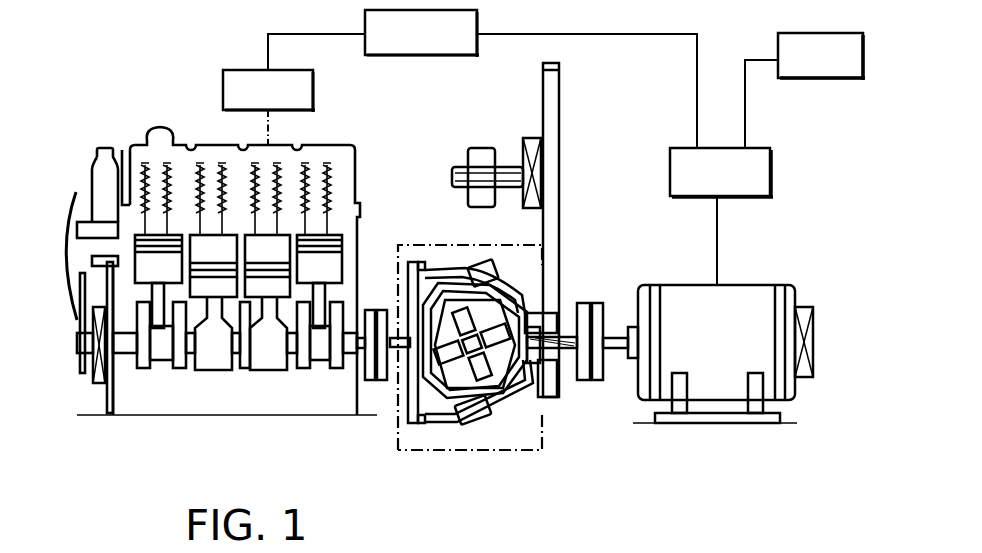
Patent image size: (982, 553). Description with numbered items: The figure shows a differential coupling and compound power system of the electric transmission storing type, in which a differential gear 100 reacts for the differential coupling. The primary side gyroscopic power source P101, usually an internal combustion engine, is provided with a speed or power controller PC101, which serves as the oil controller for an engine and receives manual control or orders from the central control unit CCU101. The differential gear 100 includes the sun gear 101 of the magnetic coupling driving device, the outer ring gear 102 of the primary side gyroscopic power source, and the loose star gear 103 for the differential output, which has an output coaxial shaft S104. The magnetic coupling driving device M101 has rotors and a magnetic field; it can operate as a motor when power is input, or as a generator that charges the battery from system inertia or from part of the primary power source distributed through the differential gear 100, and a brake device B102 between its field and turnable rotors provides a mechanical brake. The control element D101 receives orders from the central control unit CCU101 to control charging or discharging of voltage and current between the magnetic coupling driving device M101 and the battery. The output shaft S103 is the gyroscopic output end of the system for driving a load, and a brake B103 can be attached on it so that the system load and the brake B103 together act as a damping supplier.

The differential gear 100 is at (512, 452).
The sun gear 101 is at (528, 388).
The outer ring gear 102 is at (416, 302).
The loose star gear 103 is at (486, 300).
The primary side gyroscopic power source P101 is at (358, 190).
The magnetic coupling driving device M101 is at (748, 297).
The control element of magnetic coupling driving device D101 is at (721, 216).
The speed or power controller PC101 is at (269, 107).
The central control unit CCU101 is at (482, 79).
The brake device B102 is at (815, 341).
The brake B103 is at (530, 140).
The output shaft S103 is at (455, 172).
The output coaxial shaft S104 is at (560, 328).